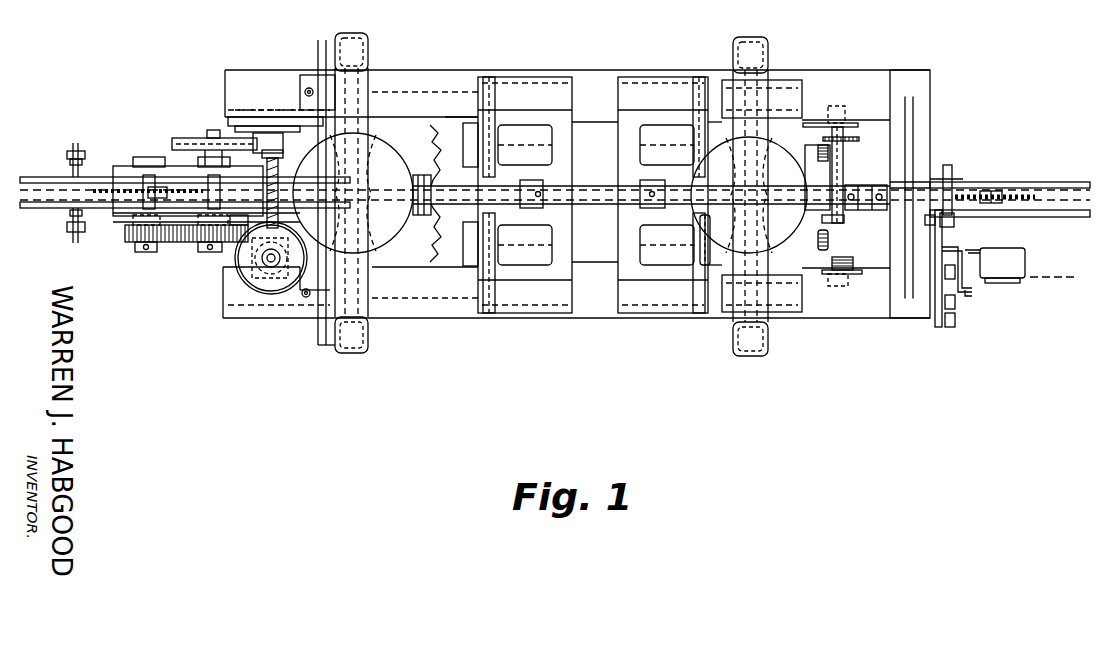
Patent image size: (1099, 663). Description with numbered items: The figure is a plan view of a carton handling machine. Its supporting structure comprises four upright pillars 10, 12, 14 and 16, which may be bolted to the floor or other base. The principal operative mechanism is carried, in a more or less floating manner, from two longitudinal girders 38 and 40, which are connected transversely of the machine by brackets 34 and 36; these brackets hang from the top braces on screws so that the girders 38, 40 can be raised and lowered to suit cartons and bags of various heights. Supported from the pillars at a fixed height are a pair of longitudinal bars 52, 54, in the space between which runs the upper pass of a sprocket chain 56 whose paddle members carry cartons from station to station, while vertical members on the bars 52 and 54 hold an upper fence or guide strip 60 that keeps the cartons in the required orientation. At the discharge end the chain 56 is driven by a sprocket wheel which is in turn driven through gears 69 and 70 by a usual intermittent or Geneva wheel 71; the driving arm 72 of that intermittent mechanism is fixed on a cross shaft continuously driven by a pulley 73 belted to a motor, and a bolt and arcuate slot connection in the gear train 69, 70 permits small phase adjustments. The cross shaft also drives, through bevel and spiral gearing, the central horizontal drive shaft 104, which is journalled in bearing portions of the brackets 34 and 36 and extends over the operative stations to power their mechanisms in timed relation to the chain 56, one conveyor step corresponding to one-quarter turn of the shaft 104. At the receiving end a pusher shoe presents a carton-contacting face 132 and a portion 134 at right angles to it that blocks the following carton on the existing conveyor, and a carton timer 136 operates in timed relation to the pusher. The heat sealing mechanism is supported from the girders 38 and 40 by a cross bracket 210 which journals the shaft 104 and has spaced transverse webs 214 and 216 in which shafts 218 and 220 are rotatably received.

The upright pillar 10 is at (362, 342).
The upright pillar 12 is at (358, 38).
The upright pillar 14 is at (752, 344).
The upright pillar 16 is at (760, 40).
The bracket 34 is at (368, 88).
The bracket 36 is at (770, 56).
The longitudinal girder 38 is at (447, 72).
The longitudinal girder 40 is at (428, 315).
The longitudinal bar 52 is at (1066, 182).
The longitudinal bar 54 is at (1082, 217).
The sprocket chain 56 is at (1036, 198).
The upper fence or guide strip 60 is at (46, 177).
The gear 69 is at (125, 240).
The gear 70 is at (208, 246).
The intermittent or Geneva wheel 71 is at (196, 134).
The driving arm 72 is at (279, 152).
The pulley 73 is at (230, 118).
The central horizontal drive shaft 104 is at (466, 188).
The carton-contacting face 132 is at (958, 250).
The portion 134 is at (972, 294).
The carton timer 136 is at (1024, 266).
The cross bracket 210 is at (638, 300).
The transverse web 214 is at (620, 174).
The transverse web 216 is at (702, 272).
The shaft 218 is at (616, 240).
The shaft 220 is at (618, 148).